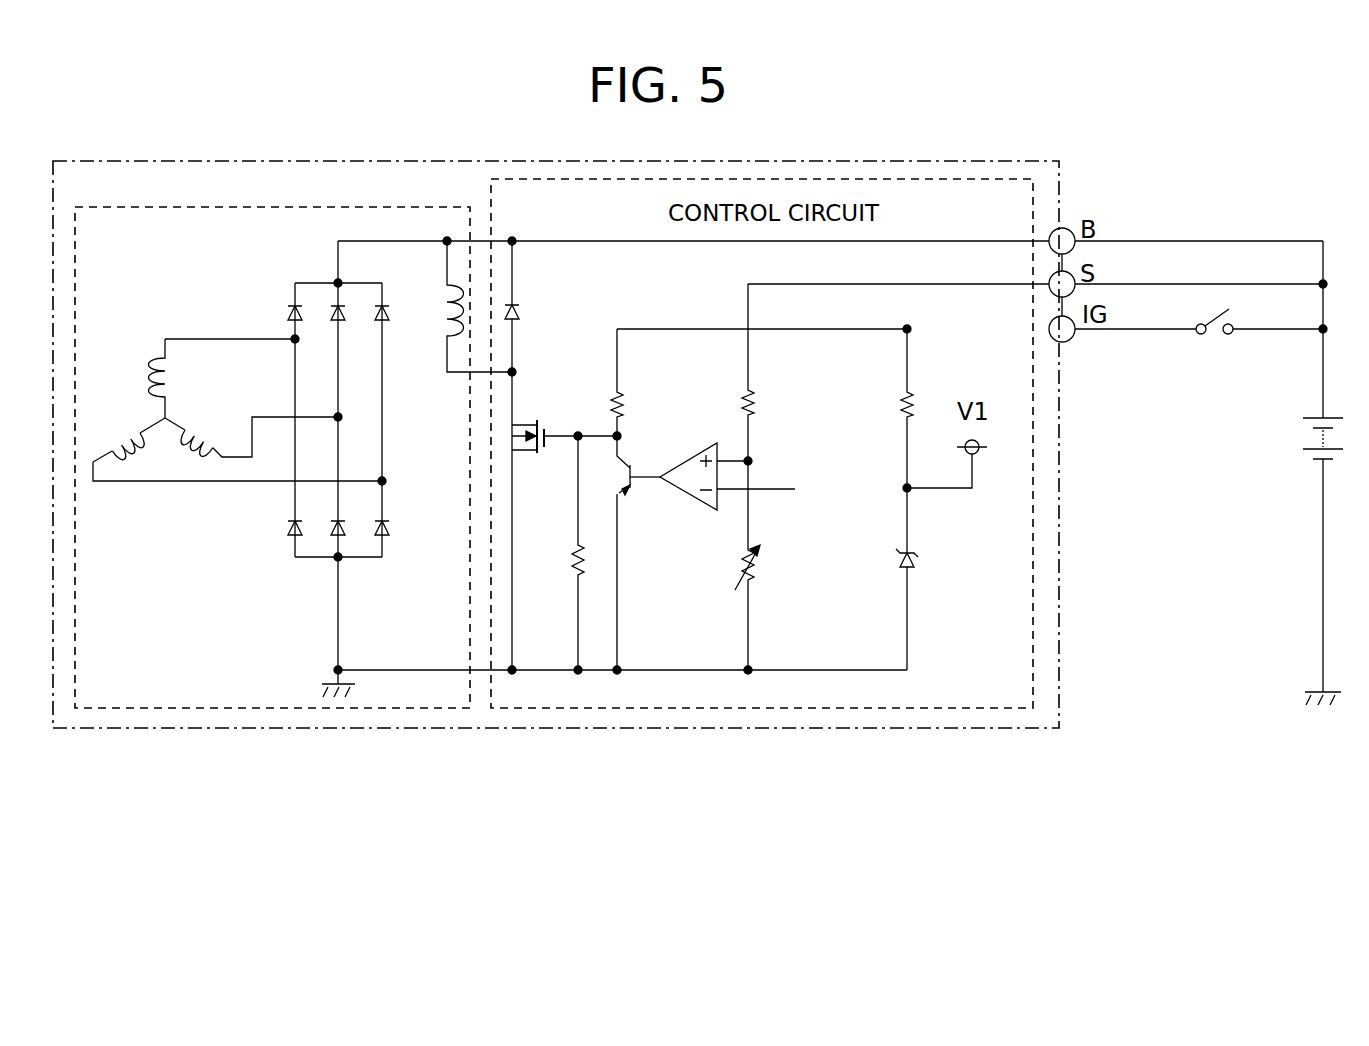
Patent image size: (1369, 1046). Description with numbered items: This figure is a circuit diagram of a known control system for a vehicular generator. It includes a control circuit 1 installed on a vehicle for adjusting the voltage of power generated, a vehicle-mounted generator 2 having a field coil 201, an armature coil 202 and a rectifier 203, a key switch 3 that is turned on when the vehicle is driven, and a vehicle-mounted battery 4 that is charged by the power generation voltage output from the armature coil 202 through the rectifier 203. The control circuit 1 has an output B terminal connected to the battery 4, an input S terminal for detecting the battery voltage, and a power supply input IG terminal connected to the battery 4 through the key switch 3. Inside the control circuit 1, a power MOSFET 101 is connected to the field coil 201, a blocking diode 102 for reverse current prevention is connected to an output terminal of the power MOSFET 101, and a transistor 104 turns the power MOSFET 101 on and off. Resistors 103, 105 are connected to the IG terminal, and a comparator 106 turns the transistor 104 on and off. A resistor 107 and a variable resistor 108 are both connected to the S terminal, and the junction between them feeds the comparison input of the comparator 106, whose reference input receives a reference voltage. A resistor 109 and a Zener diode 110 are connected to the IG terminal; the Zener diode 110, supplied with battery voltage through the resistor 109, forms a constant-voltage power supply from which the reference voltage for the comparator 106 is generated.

The control circuit 1 is at (1040, 205).
The vehicle-mounted generator 2 is at (140, 207).
The key switch 3 is at (1223, 318).
The vehicle-mounted battery 4 is at (1318, 418).
The power MOSFET 101 is at (537, 420).
The blocking diode 102 is at (520, 317).
The resistor 103 is at (555, 551).
The transistor 104 is at (623, 497).
The resistor 105 is at (626, 404).
The comparator 106 is at (683, 460).
The resistor 107 is at (774, 374).
The variable resistor 108 is at (728, 567).
The resistor 109 is at (885, 408).
The Zener diode 110 is at (912, 568).
The field coil 201 is at (428, 305).
The armature coil 202 is at (145, 400).
The rectifier 203 is at (292, 312).